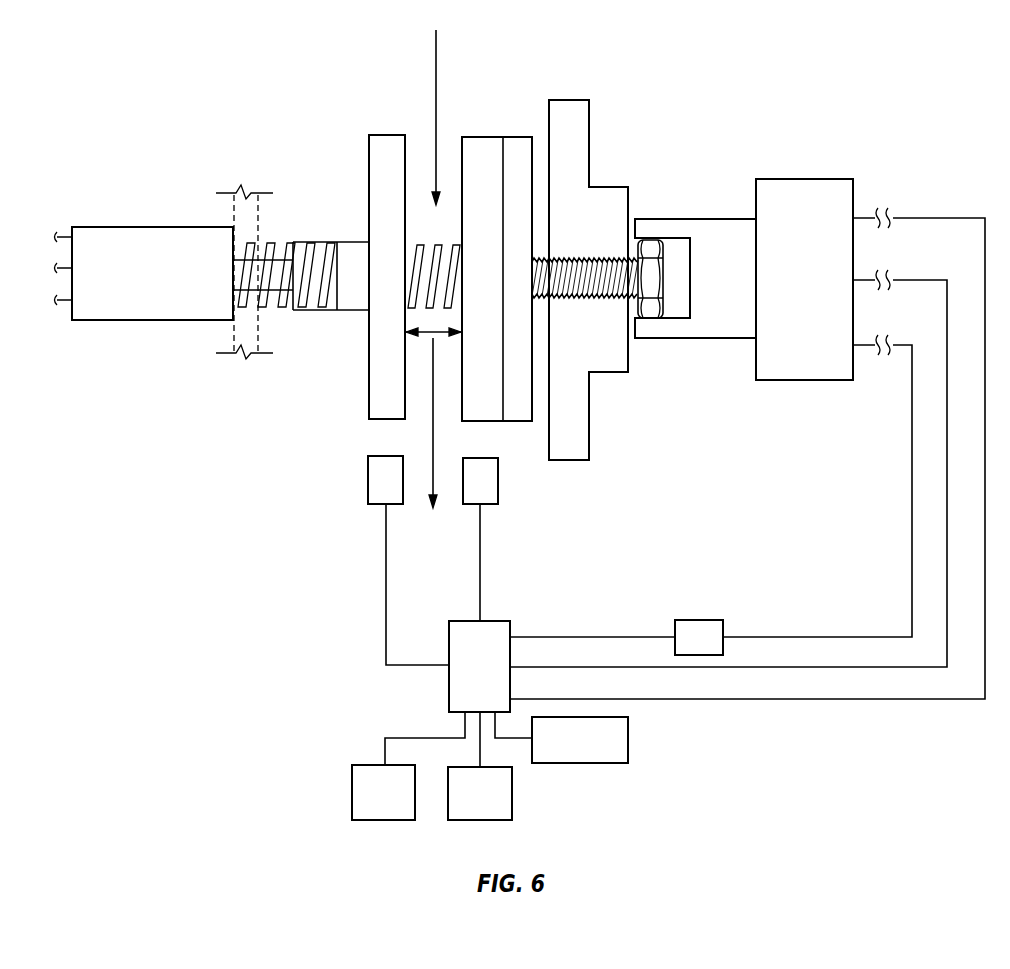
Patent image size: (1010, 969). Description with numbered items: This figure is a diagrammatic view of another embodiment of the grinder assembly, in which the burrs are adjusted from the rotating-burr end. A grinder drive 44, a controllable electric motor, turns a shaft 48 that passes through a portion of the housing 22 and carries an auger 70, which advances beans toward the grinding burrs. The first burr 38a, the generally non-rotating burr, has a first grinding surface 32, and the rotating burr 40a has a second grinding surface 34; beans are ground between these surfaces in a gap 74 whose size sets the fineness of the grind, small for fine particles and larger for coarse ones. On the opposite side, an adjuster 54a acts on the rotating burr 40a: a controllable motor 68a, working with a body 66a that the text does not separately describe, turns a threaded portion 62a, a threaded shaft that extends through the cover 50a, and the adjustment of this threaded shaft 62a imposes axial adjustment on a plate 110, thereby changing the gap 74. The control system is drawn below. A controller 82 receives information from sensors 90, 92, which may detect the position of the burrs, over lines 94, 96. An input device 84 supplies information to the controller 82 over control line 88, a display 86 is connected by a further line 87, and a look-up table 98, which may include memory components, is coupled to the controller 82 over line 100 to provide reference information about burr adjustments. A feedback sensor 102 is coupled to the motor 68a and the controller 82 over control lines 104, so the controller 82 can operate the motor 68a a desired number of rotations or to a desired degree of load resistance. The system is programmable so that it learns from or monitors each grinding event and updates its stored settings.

The housing 22 is at (232, 338).
The first grinding surface 32 is at (404, 404).
The second grinding surface 34 is at (462, 165).
The first burr 38a is at (385, 130).
The rotating burr 40a is at (493, 130).
The grinder drive 44 is at (166, 287).
The shaft 48 is at (287, 242).
The cover 50a is at (588, 425).
The adjuster 54a is at (733, 156).
The threaded portion 62a is at (599, 258).
The nut housing 66a is at (740, 290).
The controllable motor 68a is at (823, 291).
The auger 70 is at (413, 258).
The gap 74 is at (442, 338).
The controller 82 is at (494, 679).
The input device 84 is at (492, 811).
The display 86 is at (594, 754).
The signal line 87 is at (515, 737).
The control line 88 is at (480, 735).
The sensor 90 is at (498, 494).
The sensor 92 is at (368, 496).
The line 94 is at (480, 570).
The line 96 is at (386, 570).
The look-up table 98 is at (397, 811).
The line 100 is at (388, 738).
The feedback sensor 102 is at (700, 620).
The control lines 104 is at (803, 638).
The plate 110 is at (516, 422).